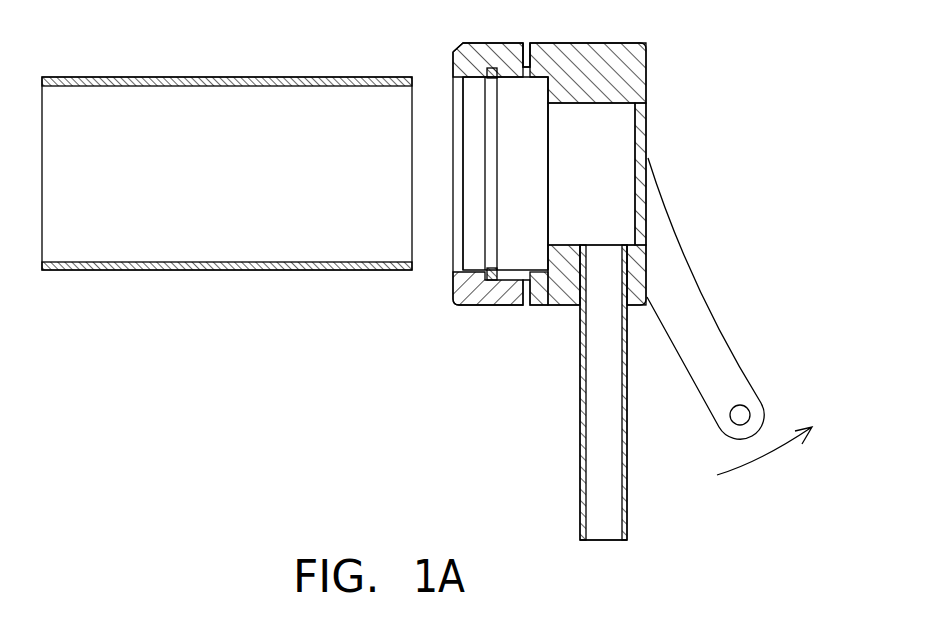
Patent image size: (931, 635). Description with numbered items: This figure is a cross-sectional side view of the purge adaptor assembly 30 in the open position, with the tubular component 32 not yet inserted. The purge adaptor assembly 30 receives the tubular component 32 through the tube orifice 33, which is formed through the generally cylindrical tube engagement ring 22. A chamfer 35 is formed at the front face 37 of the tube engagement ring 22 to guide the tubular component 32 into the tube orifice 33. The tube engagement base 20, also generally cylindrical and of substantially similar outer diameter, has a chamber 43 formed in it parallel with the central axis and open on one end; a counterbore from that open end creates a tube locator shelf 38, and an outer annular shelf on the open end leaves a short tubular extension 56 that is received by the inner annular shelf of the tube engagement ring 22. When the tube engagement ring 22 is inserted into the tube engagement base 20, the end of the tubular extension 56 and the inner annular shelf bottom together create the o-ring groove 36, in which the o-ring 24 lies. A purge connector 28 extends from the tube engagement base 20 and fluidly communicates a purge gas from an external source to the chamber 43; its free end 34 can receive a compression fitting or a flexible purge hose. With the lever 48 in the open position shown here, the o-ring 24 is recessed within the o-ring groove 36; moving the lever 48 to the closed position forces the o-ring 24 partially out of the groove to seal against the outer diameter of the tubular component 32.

The purge adaptor assembly 30 is at (672, 64).
The tube engagement base 20 is at (642, 133).
The chamber 43 is at (610, 195).
The tube locator shelf 38 is at (548, 90).
The tubular extension 56 is at (516, 68).
The front face 37 is at (453, 63).
The tube orifice 33 is at (452, 120).
The chamfer 35 is at (455, 225).
The o-ring 24 is at (487, 270).
The o-ring groove 36 is at (475, 304).
The tube engagement ring 22 is at (515, 304).
The tubular component 32 is at (223, 270).
The purge connector 28 is at (579, 462).
The rod end 34 is at (602, 540).
The lever 48 is at (708, 325).